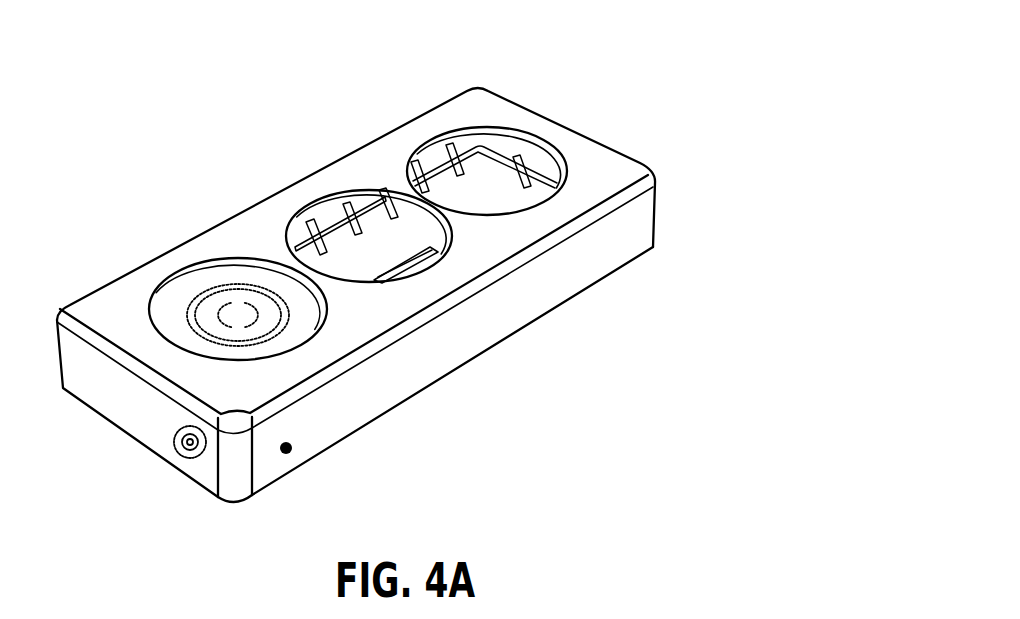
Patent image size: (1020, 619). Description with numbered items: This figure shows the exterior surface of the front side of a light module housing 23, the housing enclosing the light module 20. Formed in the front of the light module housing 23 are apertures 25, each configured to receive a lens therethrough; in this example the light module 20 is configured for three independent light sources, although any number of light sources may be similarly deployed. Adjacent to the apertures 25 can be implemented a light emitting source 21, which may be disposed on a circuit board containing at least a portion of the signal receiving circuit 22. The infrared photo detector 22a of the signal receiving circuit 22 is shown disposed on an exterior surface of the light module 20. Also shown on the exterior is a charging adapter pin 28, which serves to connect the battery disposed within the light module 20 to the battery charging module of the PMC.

The light module 20 is at (543, 411).
The light emitting source 21 is at (237, 312).
The signal receiving circuit 22 is at (170, 315).
The infrared photo detector 22a is at (183, 442).
The light module housing 23 is at (240, 232).
The apertures 25 is at (377, 238).
The charging adapter pin 28 is at (287, 455).